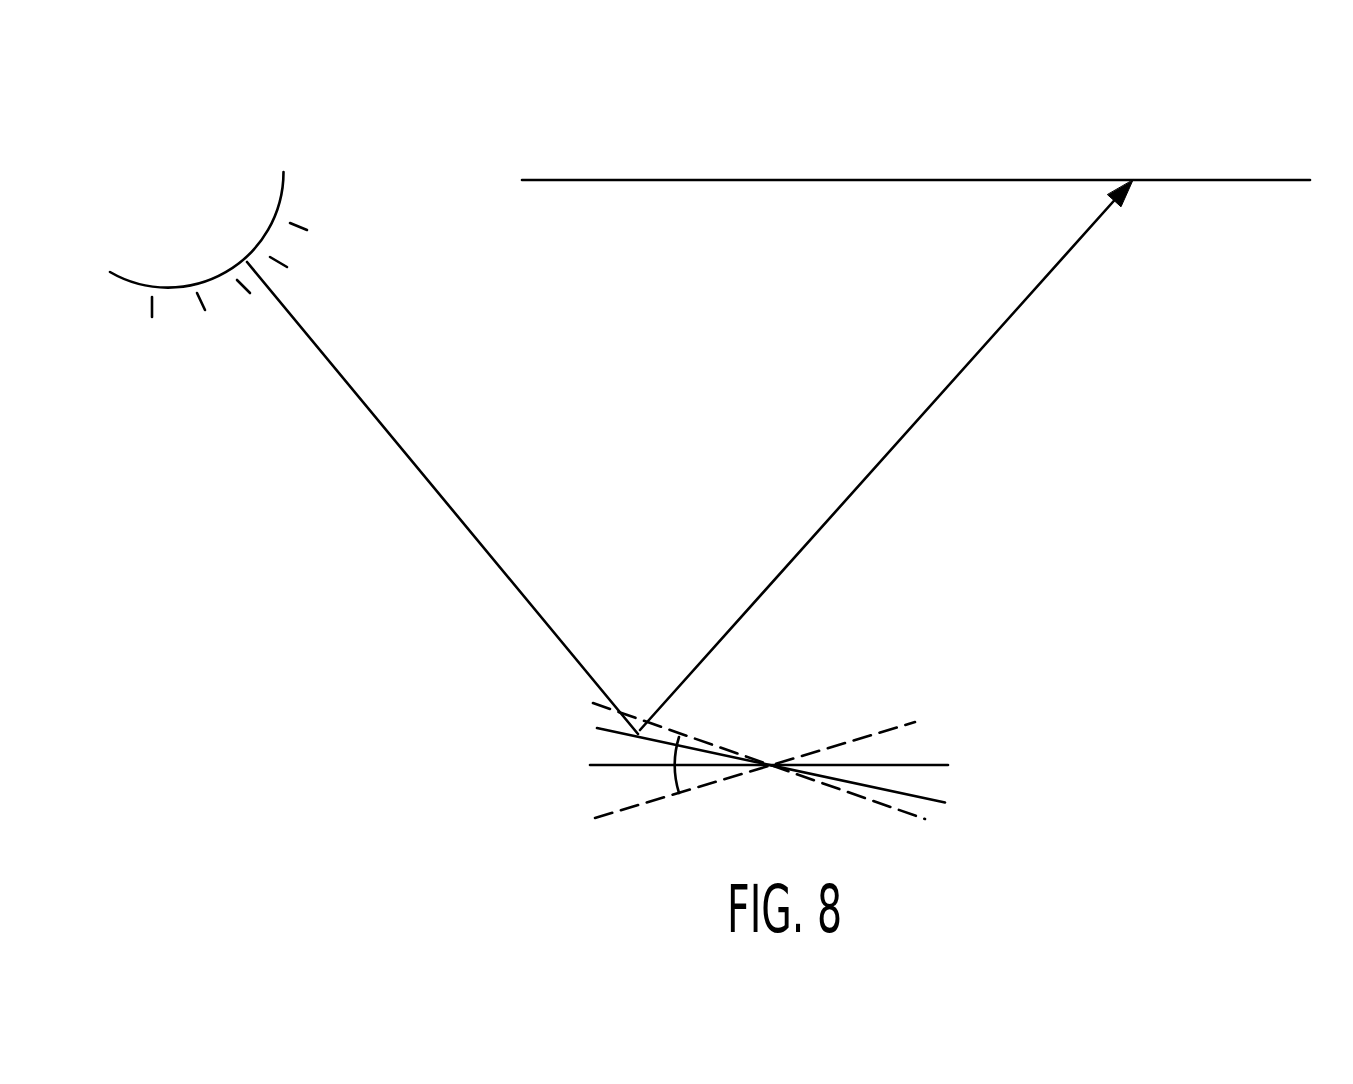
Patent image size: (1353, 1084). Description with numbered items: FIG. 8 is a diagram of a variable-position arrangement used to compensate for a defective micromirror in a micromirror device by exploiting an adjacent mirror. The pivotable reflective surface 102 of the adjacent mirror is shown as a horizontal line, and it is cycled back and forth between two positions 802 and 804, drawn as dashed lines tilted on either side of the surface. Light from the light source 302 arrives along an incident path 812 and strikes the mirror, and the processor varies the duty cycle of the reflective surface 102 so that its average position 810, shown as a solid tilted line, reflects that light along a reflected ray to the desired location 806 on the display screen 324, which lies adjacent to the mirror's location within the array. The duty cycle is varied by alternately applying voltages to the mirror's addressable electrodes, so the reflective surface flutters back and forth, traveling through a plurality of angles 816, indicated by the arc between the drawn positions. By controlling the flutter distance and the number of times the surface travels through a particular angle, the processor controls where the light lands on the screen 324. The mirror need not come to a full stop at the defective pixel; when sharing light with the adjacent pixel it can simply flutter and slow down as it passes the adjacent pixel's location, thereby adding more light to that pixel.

The display screen 324 is at (607, 178).
The location on the display screen 806 is at (1132, 187).
The light source 302 is at (270, 228).
The incident light 812 is at (320, 356).
The average position of the reflective surface 810 is at (597, 726).
The pivotable reflective surface 102 is at (933, 764).
The first position 802 is at (925, 818).
The second position 804 is at (915, 722).
The plurality of angles 816 is at (674, 778).